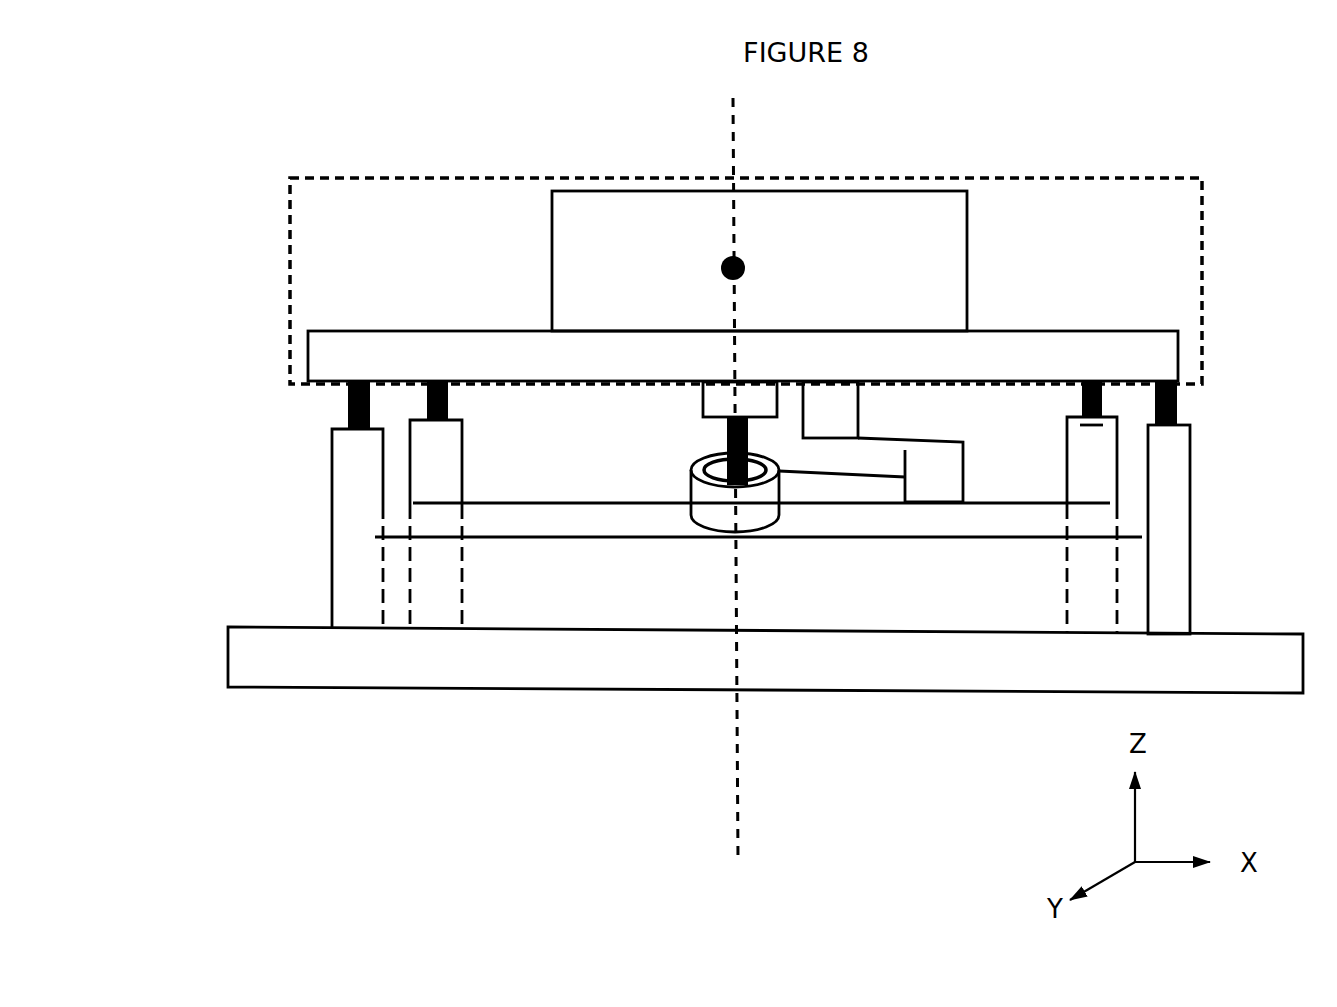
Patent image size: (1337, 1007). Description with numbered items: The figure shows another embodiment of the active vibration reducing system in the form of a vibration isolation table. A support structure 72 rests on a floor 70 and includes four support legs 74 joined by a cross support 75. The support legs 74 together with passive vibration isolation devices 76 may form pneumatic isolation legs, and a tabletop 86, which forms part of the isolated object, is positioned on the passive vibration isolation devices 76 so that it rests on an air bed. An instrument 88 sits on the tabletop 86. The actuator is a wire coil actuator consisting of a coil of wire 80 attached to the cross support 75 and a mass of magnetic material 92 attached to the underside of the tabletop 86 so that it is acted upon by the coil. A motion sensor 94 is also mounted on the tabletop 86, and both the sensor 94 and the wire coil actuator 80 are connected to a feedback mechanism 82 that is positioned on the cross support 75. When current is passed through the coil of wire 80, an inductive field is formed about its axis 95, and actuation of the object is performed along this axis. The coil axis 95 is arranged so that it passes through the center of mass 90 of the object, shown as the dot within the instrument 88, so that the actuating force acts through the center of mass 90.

The floor 70 is at (1249, 681).
The support structure 72 is at (1212, 539).
The support legs 74 is at (1184, 457).
The cross support 75 is at (565, 526).
The passive vibration isolation devices 76 is at (1189, 403).
The coil of wire 80 is at (701, 518).
The feedback mechanism 82 is at (929, 495).
The tabletop 86 is at (338, 361).
The instrument 88 is at (620, 234).
The center of mass 90 is at (750, 261).
The mass of magnetic material 92 is at (718, 432).
The motion sensor 94 is at (869, 403).
The axis 95 is at (757, 821).